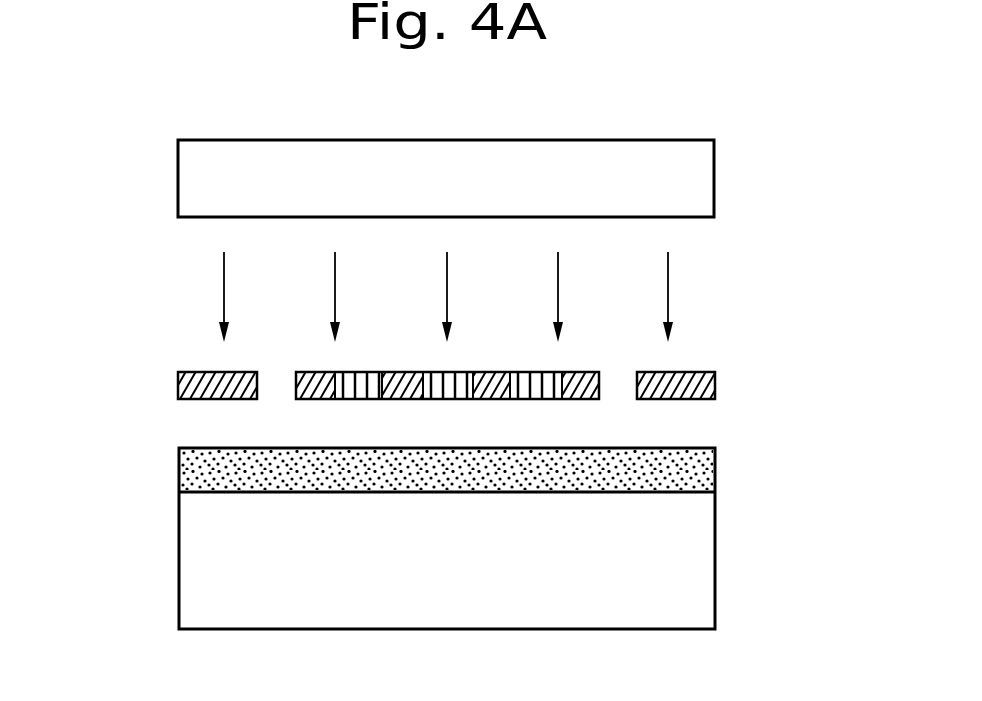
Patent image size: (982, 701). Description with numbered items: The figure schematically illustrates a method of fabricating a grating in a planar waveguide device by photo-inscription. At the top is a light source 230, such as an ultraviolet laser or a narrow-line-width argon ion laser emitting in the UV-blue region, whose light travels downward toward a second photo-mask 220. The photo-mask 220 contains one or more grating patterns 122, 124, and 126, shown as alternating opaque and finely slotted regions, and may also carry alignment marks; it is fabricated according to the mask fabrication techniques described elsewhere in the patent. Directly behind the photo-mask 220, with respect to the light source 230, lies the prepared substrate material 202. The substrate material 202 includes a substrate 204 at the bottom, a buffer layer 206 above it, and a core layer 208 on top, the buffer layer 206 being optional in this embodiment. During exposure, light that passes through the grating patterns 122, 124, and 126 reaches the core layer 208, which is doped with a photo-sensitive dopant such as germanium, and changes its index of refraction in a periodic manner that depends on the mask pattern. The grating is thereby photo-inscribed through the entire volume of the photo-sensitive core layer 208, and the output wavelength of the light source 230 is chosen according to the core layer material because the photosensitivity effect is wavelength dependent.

The light source 230 is at (714, 173).
The second photo-mask 220 is at (505, 339).
The grating pattern 126 is at (334, 372).
The grating pattern 124 is at (430, 372).
The grating pattern 122 is at (535, 372).
The substrate material 202 is at (435, 536).
The substrate 204 is at (715, 560).
The buffer layer 206 is at (715, 488).
The core layer 208 is at (715, 459).